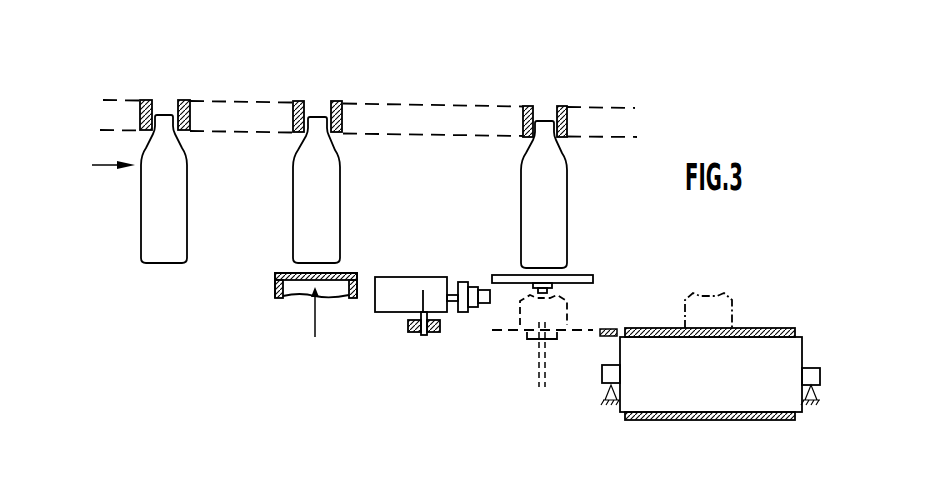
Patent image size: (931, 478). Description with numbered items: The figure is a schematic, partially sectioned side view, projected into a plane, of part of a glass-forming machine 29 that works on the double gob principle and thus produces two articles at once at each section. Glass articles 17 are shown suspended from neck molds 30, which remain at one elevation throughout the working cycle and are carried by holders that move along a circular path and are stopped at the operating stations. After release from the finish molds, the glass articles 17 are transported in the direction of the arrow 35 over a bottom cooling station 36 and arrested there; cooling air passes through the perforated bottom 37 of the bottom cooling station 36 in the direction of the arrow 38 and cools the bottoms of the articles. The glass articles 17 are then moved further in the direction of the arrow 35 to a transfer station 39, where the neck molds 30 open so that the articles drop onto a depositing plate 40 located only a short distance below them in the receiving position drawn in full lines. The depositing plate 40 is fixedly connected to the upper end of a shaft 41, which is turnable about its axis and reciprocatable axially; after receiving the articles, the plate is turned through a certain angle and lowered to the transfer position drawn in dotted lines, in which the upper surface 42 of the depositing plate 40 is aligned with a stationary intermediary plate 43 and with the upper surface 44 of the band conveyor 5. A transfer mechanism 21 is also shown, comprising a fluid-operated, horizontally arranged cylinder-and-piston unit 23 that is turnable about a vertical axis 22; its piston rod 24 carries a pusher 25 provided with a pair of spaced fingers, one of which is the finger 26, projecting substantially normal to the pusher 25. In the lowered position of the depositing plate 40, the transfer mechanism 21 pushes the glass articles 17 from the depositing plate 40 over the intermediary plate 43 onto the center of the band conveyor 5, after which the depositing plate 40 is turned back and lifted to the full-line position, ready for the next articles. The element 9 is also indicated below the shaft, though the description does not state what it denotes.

The band conveyor 5 is at (793, 328).
The control line 9 is at (542, 387).
The glass article 17 is at (141, 217).
The transfer mechanism 21 is at (381, 275).
The vertical axis 22 is at (423, 292).
The cylinder-and-piston unit 23 is at (385, 313).
The piston rod 24 is at (452, 312).
The pusher 25 is at (462, 280).
The finger 26 is at (478, 306).
The glass-forming machine 29 is at (598, 82).
The neck mold 30 is at (186, 99).
The arrow 35 is at (103, 162).
The bottom cooling station 36 is at (301, 312).
The perforated bottom 37 is at (290, 273).
The arrow 38 is at (316, 312).
The transfer station 39 is at (542, 94).
The depositing plate 40 is at (595, 273).
The shaft 41 is at (538, 355).
The upper surface 42 is at (578, 272).
The intermediary plate 43 is at (613, 328).
The upper surface 44 is at (662, 328).